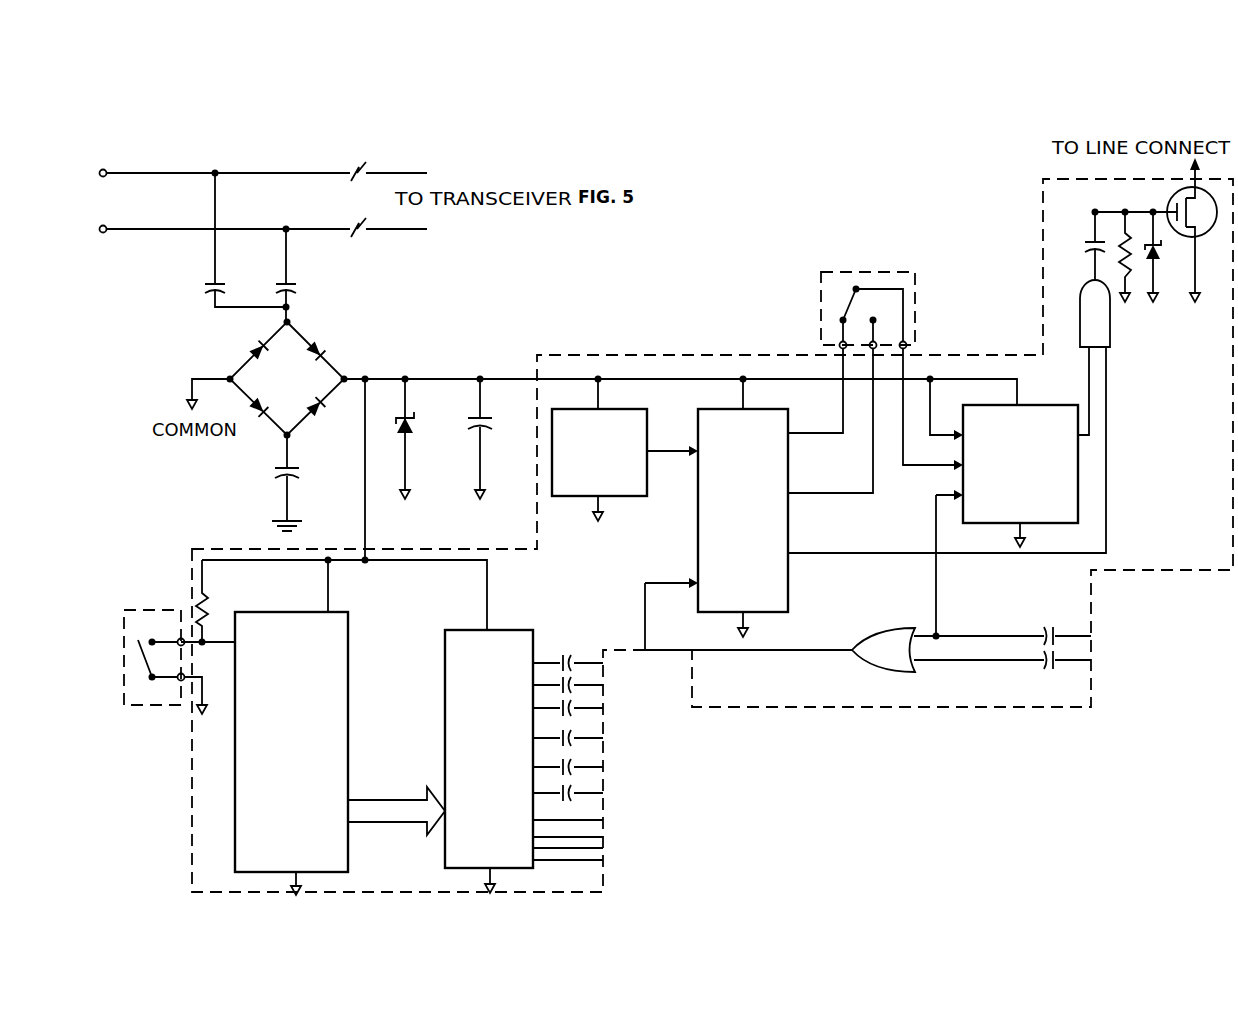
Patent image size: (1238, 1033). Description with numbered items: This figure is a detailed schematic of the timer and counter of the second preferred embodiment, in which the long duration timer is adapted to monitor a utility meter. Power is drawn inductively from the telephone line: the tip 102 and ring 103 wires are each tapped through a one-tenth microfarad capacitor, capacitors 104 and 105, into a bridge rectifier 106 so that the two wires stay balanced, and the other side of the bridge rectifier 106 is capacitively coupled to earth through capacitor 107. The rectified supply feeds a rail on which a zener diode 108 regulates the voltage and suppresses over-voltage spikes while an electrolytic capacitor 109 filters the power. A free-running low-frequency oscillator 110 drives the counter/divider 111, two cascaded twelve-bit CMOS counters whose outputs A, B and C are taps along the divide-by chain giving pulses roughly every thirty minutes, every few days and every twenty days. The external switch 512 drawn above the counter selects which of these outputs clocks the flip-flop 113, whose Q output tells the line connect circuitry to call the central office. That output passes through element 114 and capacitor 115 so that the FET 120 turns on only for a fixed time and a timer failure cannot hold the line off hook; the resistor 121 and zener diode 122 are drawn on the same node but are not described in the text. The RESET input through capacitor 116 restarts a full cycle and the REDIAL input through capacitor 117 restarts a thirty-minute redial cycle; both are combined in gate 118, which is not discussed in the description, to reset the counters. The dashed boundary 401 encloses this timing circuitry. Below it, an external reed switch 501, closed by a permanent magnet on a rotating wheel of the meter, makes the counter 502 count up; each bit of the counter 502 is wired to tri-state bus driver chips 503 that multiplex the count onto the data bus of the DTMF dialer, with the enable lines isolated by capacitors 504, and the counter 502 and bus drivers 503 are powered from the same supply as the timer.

The tip 102 is at (107, 171).
The ring 103 is at (107, 227).
The capacitor 104 is at (221, 283).
The capacitor 105 is at (292, 283).
The bridge rectifier 106 is at (304, 390).
The capacitor 107 is at (293, 479).
The zener diode 108 is at (423, 439).
The electrolytic capacitor 109 is at (488, 430).
The oscillator 110 is at (558, 498).
The counter/divider 111 is at (698, 549).
The flip-flop 113 is at (1047, 408).
The AND gate 114 is at (1110, 330).
The capacitor 115 is at (1085, 248).
The capacitor 116 is at (1052, 632).
The capacitor 117 is at (1055, 666).
The OR gate 118 is at (858, 673).
The FET 120 is at (1210, 232).
The resistor 121 is at (1115, 257).
The zener diode 122 is at (1169, 257).
The control circuit 401 is at (746, 354).
The external reed switch 501 is at (160, 607).
The counter 502 is at (349, 623).
The tri-state bus driver chips 503 is at (514, 633).
The capacitors 504 is at (641, 726).
The external switch 512 is at (915, 306).